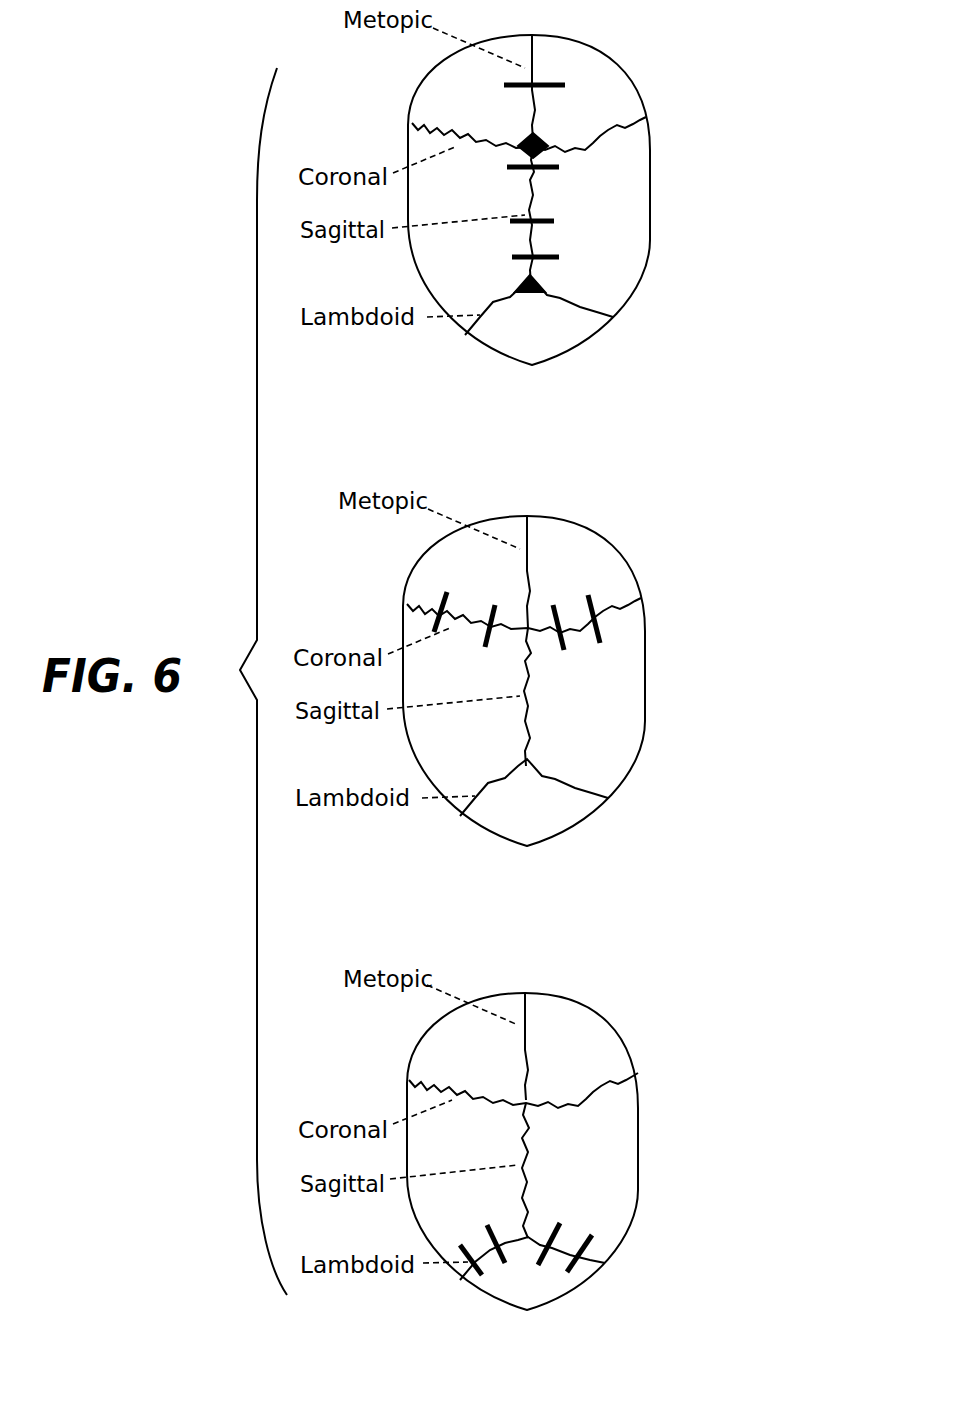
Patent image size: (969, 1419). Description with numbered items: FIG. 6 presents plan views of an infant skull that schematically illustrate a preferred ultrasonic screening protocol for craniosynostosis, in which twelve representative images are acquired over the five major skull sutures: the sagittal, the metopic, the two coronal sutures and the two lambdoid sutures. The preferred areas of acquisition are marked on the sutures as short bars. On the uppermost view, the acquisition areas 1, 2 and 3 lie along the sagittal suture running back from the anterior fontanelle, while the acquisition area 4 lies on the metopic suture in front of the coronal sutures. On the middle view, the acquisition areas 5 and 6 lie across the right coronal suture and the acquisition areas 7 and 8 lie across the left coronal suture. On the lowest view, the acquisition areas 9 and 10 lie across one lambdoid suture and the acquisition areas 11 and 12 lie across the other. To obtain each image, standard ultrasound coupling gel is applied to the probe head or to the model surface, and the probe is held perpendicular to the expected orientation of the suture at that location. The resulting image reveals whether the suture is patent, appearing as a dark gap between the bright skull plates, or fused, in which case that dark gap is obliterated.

The preferred area of acquisition 1 is at (551, 170).
The preferred area of acquisition 2 is at (553, 221).
The preferred area of acquisition 3 is at (554, 258).
The preferred area of acquisition 4 is at (547, 85).
The preferred area of acquisition 5 is at (564, 646).
The preferred area of acquisition 6 is at (599, 641).
The preferred area of acquisition 7 is at (481, 638).
The preferred area of acquisition 8 is at (436, 632).
The preferred area of acquisition 9 is at (554, 1231).
The preferred area of acquisition 10 is at (589, 1235).
The preferred area of acquisition 11 is at (501, 1232).
The preferred area of acquisition 12 is at (466, 1238).